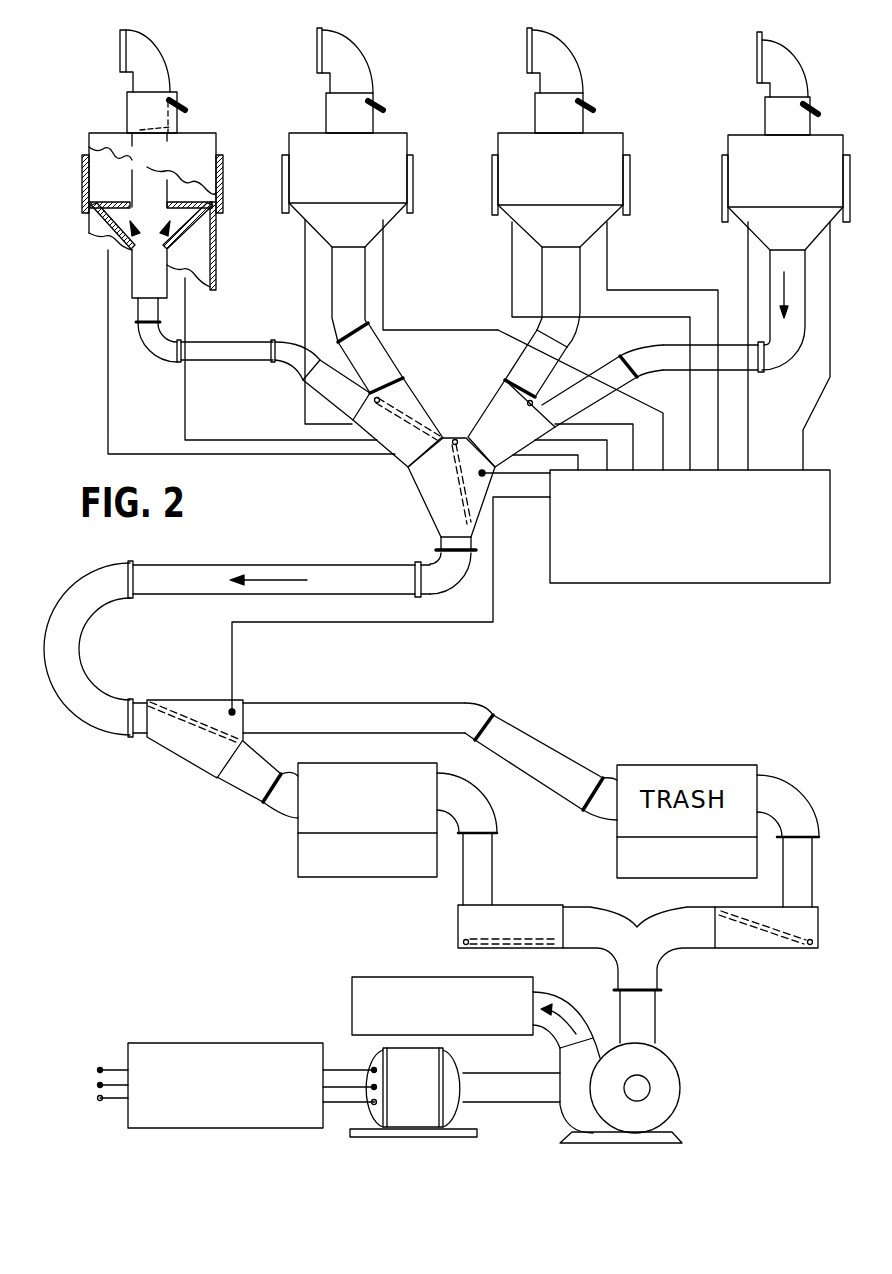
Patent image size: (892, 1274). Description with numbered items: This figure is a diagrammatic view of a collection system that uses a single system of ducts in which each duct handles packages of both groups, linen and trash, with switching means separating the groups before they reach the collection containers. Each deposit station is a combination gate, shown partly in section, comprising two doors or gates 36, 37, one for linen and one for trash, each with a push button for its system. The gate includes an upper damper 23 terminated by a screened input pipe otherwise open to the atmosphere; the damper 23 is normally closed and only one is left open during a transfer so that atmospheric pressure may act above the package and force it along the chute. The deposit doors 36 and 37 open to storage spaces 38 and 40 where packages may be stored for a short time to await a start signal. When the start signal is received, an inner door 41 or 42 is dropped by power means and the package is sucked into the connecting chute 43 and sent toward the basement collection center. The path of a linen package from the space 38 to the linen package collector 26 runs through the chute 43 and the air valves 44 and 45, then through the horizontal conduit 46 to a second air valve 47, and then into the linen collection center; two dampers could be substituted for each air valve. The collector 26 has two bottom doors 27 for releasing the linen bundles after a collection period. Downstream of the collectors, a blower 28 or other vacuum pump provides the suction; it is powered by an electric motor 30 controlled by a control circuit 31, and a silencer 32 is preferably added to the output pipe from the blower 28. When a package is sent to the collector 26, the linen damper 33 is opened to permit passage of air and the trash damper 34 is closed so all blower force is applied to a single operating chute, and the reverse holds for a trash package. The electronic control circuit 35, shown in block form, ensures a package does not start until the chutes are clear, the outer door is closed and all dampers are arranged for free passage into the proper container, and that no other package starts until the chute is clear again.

The damper 23 is at (187, 120).
The linen package collector 26 is at (320, 813).
The bottom doors 27 is at (352, 863).
The blower 28 is at (668, 1095).
The electric motor 30 is at (425, 1108).
The control circuit 31 is at (225, 1117).
The silencer 32 is at (360, 1012).
The damper 33 is at (463, 925).
The damper 34 is at (757, 940).
The electronic control circuit 35 is at (655, 580).
The door 36 is at (83, 173).
The door 37 is at (222, 177).
The storage space 38 is at (113, 132).
The storage space 40 is at (177, 190).
The inner door 41 is at (99, 206).
The inner door 42 is at (220, 233).
The connecting chute 43 is at (147, 313).
The air valve 44 is at (412, 403).
The air valve 45 is at (433, 493).
The horizontal conduit 46 is at (212, 576).
The air valve 47 is at (180, 747).